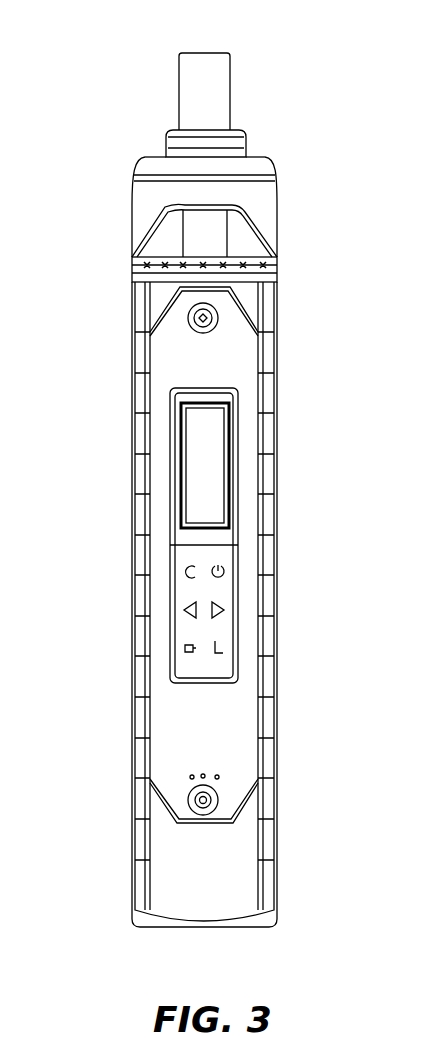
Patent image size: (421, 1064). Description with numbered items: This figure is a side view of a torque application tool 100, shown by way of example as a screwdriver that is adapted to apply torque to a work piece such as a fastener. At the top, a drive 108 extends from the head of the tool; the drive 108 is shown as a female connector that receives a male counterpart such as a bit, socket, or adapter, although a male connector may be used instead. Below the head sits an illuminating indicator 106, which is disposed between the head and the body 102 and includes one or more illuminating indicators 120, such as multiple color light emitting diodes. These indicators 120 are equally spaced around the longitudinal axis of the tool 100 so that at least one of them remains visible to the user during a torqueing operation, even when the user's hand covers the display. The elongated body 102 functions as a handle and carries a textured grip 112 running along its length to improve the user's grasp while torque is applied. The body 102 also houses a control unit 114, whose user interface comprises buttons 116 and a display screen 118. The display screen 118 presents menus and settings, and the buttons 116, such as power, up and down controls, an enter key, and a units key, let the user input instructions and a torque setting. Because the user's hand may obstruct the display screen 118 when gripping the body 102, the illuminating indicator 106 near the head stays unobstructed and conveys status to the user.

The torque application tool 100 is at (118, 75).
The body portion 102 is at (247, 895).
The illuminating indicator 106 is at (133, 265).
The drive 108 is at (205, 118).
The textured grip 112 is at (132, 677).
The control unit 114 is at (210, 376).
The button 116 is at (228, 595).
The display screen 118 is at (213, 490).
The illuminating indicators 120 is at (277, 265).